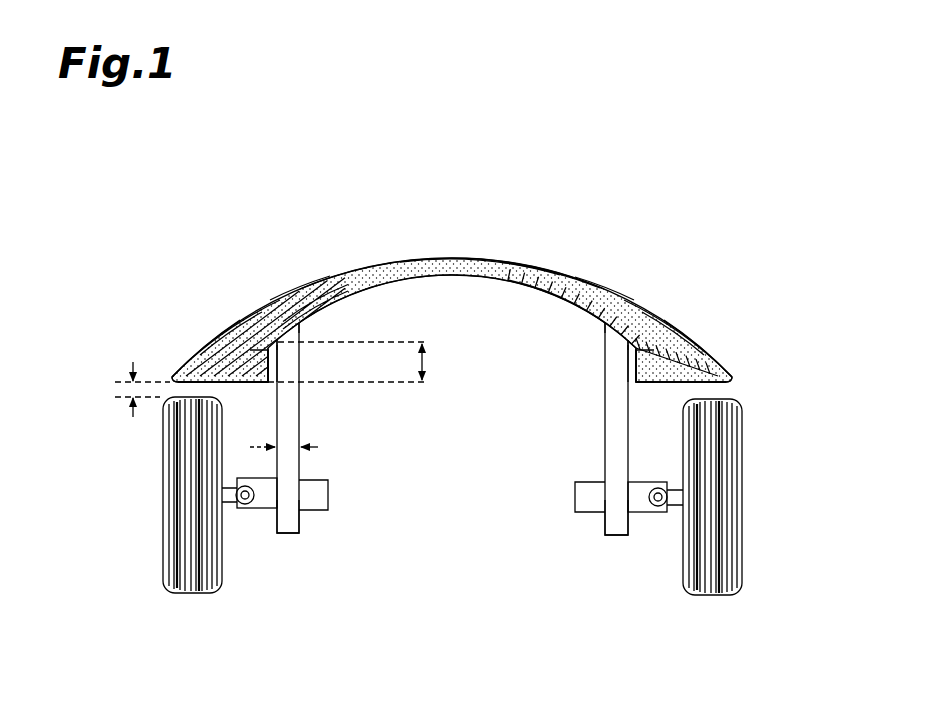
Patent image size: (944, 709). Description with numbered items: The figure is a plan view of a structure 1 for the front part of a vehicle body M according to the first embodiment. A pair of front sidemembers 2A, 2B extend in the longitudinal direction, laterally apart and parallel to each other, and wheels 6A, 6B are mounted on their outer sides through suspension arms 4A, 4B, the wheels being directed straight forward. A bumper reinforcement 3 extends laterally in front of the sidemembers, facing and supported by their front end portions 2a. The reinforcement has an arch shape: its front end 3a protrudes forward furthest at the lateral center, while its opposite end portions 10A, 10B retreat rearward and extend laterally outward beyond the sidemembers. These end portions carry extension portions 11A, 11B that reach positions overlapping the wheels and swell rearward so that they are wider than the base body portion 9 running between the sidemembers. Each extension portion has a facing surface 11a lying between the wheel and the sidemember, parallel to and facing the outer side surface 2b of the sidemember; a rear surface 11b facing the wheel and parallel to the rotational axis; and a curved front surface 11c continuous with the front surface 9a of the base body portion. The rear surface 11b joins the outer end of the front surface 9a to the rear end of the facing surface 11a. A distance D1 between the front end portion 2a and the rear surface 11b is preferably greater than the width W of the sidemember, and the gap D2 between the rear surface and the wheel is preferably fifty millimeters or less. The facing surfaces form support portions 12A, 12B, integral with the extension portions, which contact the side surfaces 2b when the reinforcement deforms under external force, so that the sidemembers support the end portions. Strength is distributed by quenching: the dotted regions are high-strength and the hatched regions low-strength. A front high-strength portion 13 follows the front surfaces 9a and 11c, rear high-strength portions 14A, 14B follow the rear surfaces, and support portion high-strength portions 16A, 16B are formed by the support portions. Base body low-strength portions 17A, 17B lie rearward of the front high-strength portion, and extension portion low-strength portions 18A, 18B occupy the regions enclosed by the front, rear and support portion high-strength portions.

The structure for the front part of the vehicle body 1 is at (303, 219).
The front sidemember 2A is at (290, 417).
The front sidemember 2B is at (612, 398).
The front end portion 2a is at (298, 341).
The outer side surface 2b is at (271, 452).
The bumper reinforcement 3 is at (662, 246).
The front end 3a is at (455, 257).
The suspension arm 4A is at (267, 504).
The suspension arm 4B is at (590, 506).
The wheel 6A is at (180, 505).
The wheel 6B is at (727, 505).
The base body portion 9 is at (455, 283).
The front surface 9a is at (549, 268).
The end portion 10A is at (198, 330).
The end portion 10B is at (742, 305).
The extension portion 11A is at (217, 327).
The extension portion 11B is at (718, 352).
The facing surface 11a is at (263, 362).
The rear surface 11b is at (233, 384).
The front surface 11c is at (250, 328).
The support portion 12A is at (259, 366).
The support portion 12B is at (645, 366).
The front high-strength portion 13 is at (509, 263).
The rear high-strength portion 14A is at (188, 384).
The rear high-strength portion 14B is at (700, 385).
The support portion high-strength portion 16A is at (278, 391).
The support portion high-strength portion 16B is at (643, 386).
The base body low-strength portion 17A is at (286, 318).
The base body low-strength portion 17B is at (618, 330).
The extension portion low-strength portion 18A is at (260, 327).
The extension portion low-strength portion 18B is at (660, 336).
The distance D1 is at (362, 362).
The distance D2 is at (142, 379).
The width W is at (294, 449).
The host vehicle body M is at (150, 611).